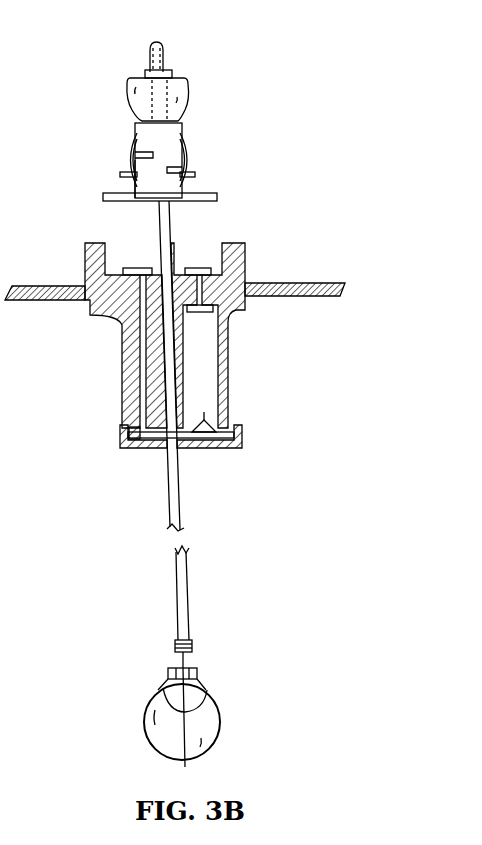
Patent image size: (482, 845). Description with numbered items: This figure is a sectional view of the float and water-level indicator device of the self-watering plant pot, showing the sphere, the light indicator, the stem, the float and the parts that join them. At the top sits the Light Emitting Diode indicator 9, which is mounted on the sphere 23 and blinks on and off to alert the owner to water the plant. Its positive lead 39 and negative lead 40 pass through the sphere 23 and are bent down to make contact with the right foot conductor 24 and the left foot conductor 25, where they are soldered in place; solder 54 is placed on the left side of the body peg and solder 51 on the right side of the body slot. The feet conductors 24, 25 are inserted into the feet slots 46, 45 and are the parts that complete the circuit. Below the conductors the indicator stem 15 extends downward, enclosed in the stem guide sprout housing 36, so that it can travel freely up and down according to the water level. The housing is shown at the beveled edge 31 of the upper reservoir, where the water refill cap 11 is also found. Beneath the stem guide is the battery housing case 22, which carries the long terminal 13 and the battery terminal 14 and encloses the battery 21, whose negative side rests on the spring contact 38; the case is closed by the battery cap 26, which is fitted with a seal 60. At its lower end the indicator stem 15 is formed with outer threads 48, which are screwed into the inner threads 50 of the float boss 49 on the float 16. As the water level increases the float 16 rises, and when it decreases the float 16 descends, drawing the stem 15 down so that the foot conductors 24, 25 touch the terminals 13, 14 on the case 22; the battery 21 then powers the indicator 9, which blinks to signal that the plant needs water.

The Light Emitting Diode indicator 9 is at (163, 44).
The sphere 23 is at (188, 93).
The right foot conductor 24 is at (208, 193).
The feet slot 45 is at (175, 173).
The feet slot 46 is at (148, 153).
The solder 51 is at (192, 170).
The positive lead 39 is at (132, 142).
The negative lead 40 is at (188, 144).
The solder 54 is at (120, 174).
The left foot conductor 25 is at (123, 203).
The battery housing case 22 is at (122, 370).
The stem guide sprout housing 36 is at (240, 243).
The beveled edge 31 is at (47, 284).
The long terminal 13 is at (143, 267).
The battery terminal 14 is at (198, 268).
The battery 21 is at (212, 358).
The spring contact 38 is at (228, 418).
The water refill cap 11 is at (127, 437).
The battery cap 26 is at (135, 447).
The seal 60 is at (155, 446).
The indicator stem 15 is at (182, 477).
The outer threads 48 is at (193, 644).
The inner threads 50 is at (168, 678).
The float boss 49 is at (195, 683).
The float 16 is at (144, 726).